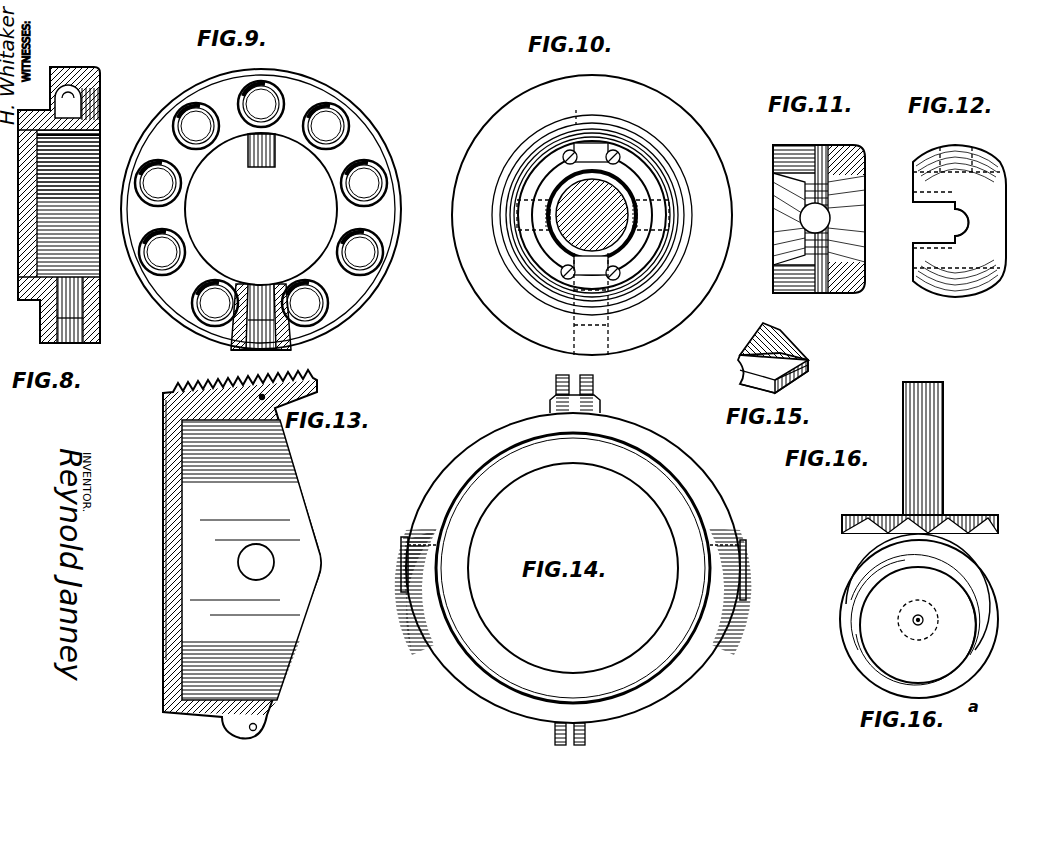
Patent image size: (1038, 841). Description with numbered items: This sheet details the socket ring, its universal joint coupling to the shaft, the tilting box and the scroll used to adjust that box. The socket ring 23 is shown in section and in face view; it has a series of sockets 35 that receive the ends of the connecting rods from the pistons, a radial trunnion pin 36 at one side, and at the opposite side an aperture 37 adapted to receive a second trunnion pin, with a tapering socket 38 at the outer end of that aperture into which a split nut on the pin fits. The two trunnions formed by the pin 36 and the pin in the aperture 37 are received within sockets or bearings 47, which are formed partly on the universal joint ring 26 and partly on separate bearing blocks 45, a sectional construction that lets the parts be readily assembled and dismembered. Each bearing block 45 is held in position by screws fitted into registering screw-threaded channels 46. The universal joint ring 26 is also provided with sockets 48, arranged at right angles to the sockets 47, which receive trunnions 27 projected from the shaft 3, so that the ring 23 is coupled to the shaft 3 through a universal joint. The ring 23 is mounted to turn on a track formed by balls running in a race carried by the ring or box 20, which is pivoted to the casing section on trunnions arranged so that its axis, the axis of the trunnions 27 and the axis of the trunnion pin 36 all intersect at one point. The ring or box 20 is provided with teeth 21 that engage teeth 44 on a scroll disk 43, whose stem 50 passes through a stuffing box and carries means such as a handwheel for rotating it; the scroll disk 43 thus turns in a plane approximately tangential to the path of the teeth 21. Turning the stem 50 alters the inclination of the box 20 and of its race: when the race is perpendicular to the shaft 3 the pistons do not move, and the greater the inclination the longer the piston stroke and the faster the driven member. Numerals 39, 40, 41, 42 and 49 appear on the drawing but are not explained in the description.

In FIG. 10, the shaft 3 is at (592, 215).
In FIG. 13, the ring or box 20 is at (242, 554).
In FIG. 14, the ring or box 20 is at (573, 568).
In FIG. 13, the teeth 21 is at (296, 376).
In FIG. 14, the teeth 21 is at (598, 396).
In FIG. 8, the socket ring 23 is at (75, 67).
In FIG. 9, the socket ring 23 is at (366, 122).
In FIG. 10, the socket ring 23 is at (507, 106).
In FIG. 11, the universal joint ring 26 is at (819, 219).
In FIG. 12, the universal joint ring 26 is at (959, 221).
In FIG. 10, the trunnions 27 is at (592, 215).
In FIG. 8, the sockets 35 is at (100, 88).
In FIG. 9, the sockets 35 is at (261, 203).
In FIG. 8, the radial trunnion pin 36 is at (100, 129).
In FIG. 9, the radial trunnion pin 36 is at (261, 160).
In FIG. 10, the radial trunnion pin 36 is at (598, 117).
In FIG. 8, the aperture 37 is at (84, 292).
In FIG. 9, the aperture 37 is at (261, 309).
In FIG. 8, the tapering socket 38 is at (100, 325).
In FIG. 9, the tapering socket 38 is at (261, 355).
In FIG. 8, the threaded bore 39 is at (100, 106).
In FIG. 13, the pin hole 40 is at (221, 732).
In FIG. 13, the inner flange 41 is at (166, 436).
In FIG. 14, the inner flange 41 is at (573, 568).
In FIG. 13, the lug 42 is at (256, 562).
In FIG. 14, the lug 42 is at (568, 591).
In FIG. 16, the scroll disk 43 is at (920, 515).
In FIG. 16A, the scroll disk 43 is at (919, 619).
In FIG. 16, the teeth 44 is at (862, 533).
In FIG. 16A, the teeth 44 is at (855, 640).
In FIG. 10, the bearing blocks 45 is at (612, 148).
In FIG. 15, the bearing blocks 45 is at (767, 357).
In FIG. 11, the screw-threaded channels 46 is at (775, 160).
In FIG. 15, the screw-threaded channels 46 is at (809, 365).
In FIG. 11, the sockets or bearings 47 is at (822, 147).
In FIG. 12, the sockets or bearings 47 is at (968, 223).
In FIG. 15, the sockets or bearings 47 is at (785, 345).
In FIG. 10, the sockets 48 is at (593, 215).
In FIG. 11, the sockets 48 is at (815, 218).
In FIG. 12, the notch 49 is at (932, 214).
In FIG. 16, the stem 50 is at (936, 448).